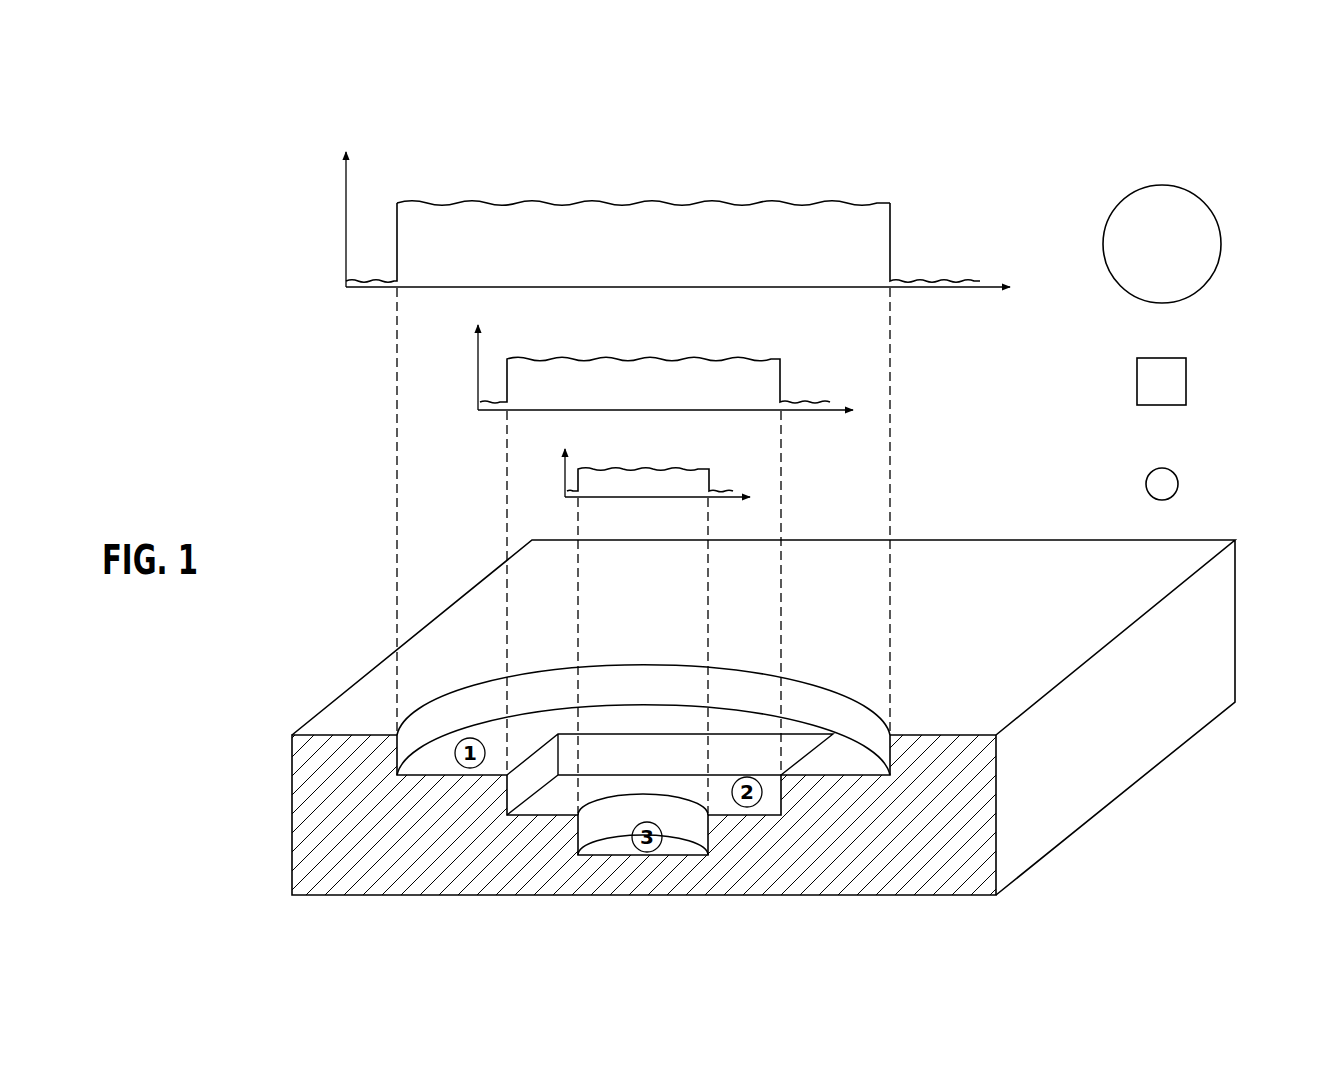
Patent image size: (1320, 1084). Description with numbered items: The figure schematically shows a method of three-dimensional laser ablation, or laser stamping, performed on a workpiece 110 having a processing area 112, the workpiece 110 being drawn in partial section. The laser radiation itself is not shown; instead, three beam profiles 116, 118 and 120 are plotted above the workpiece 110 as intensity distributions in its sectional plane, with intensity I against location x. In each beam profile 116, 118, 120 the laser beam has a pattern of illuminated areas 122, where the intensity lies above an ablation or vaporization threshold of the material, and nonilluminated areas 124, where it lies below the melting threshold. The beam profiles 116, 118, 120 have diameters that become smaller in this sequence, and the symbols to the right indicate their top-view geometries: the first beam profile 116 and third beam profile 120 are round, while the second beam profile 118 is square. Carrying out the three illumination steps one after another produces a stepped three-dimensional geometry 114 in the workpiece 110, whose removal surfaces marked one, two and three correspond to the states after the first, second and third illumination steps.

The workpiece 110 is at (1182, 772).
The processing area 112 is at (824, 670).
The three-dimensional geometry 114 is at (492, 705).
The first beam profile 116 is at (621, 212).
The second beam profile 118 is at (467, 377).
The third beam profile 120 is at (553, 477).
The illuminated areas 122 is at (660, 192).
The nonilluminated areas 124 is at (938, 270).